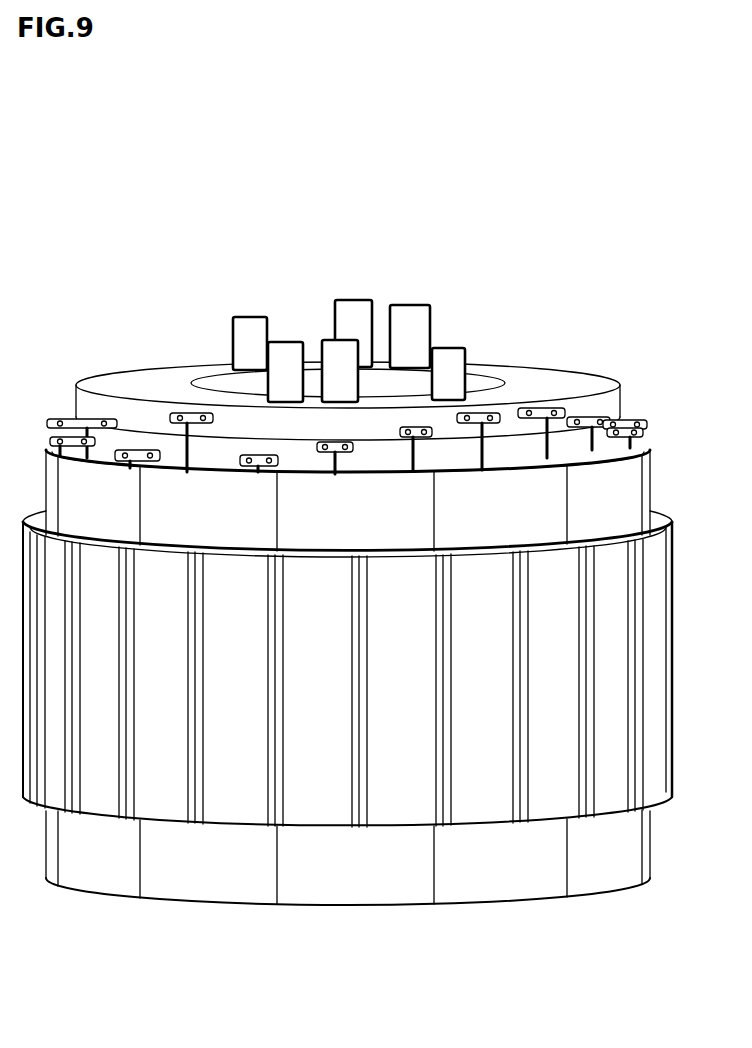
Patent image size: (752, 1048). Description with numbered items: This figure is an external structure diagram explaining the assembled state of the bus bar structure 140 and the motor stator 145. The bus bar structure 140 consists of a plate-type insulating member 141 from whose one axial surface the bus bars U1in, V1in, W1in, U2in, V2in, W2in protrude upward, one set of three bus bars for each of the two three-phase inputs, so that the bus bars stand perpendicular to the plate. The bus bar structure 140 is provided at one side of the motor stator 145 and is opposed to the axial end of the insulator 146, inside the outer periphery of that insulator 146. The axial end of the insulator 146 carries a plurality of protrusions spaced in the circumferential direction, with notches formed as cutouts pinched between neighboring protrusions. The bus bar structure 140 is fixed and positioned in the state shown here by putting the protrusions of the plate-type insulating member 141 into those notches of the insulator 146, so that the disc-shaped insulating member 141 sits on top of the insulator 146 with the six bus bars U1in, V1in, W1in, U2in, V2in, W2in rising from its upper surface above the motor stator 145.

The bus bar structure 140 is at (367, 385).
The plate-type insulating member 141 is at (541, 372).
The motor stator 145 is at (673, 541).
The insulator 146 is at (655, 460).
The bus bar U1in is at (285, 340).
The bus bar U2in is at (417, 303).
The bus bar V1in is at (453, 343).
The bus bar V2in is at (229, 318).
The bus bar W1in is at (327, 337).
The bus bar W2in is at (357, 293).